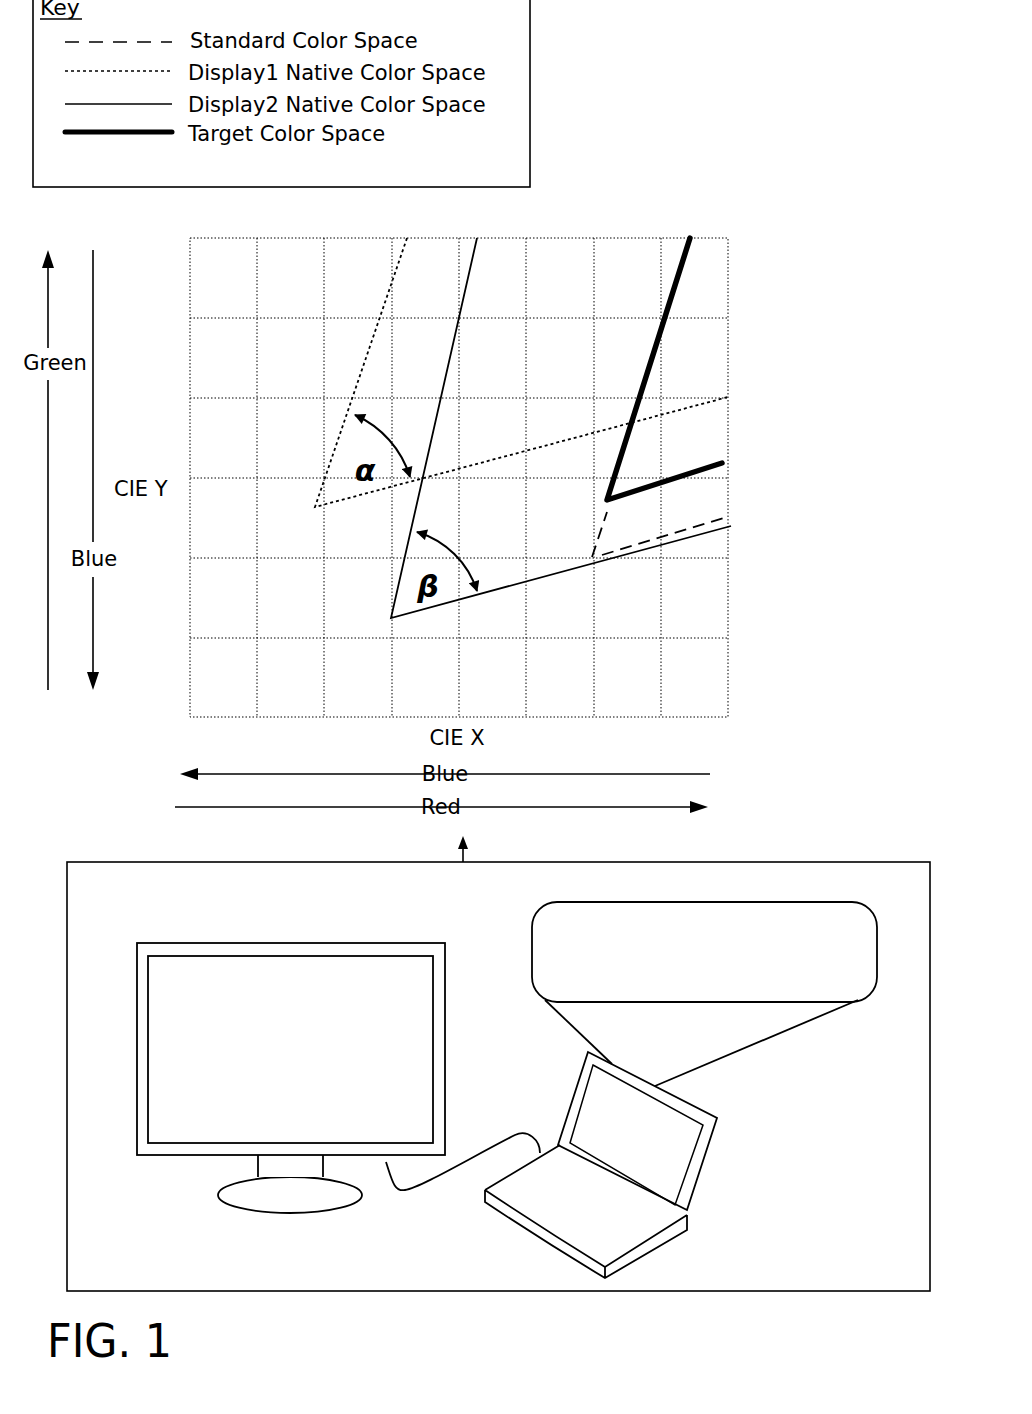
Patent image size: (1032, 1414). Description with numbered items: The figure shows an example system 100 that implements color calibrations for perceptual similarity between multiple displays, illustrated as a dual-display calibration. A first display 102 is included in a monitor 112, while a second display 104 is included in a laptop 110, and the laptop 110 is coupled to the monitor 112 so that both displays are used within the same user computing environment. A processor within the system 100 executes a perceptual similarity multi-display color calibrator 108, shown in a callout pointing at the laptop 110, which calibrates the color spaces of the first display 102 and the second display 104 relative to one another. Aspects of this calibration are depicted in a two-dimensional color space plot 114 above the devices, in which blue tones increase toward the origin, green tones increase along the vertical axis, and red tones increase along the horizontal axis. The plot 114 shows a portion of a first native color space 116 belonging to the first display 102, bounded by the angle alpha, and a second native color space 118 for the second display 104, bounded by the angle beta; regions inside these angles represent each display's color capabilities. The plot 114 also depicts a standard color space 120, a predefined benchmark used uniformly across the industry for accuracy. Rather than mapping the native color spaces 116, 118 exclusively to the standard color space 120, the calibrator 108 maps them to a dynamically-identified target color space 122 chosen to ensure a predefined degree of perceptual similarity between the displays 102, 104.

The system 100 is at (779, 159).
The first display 102 is at (290, 1049).
The second display 104 is at (636, 1135).
The perceptual similarity multi-display color calibrator 108 is at (686, 991).
The laptop 110 is at (705, 1173).
The monitor 112 is at (277, 952).
The color space plot 114 is at (730, 298).
The first native color space 116 is at (362, 357).
The second native color space 118 is at (445, 375).
The standard color space 120 is at (602, 527).
The target color space 122 is at (670, 287).